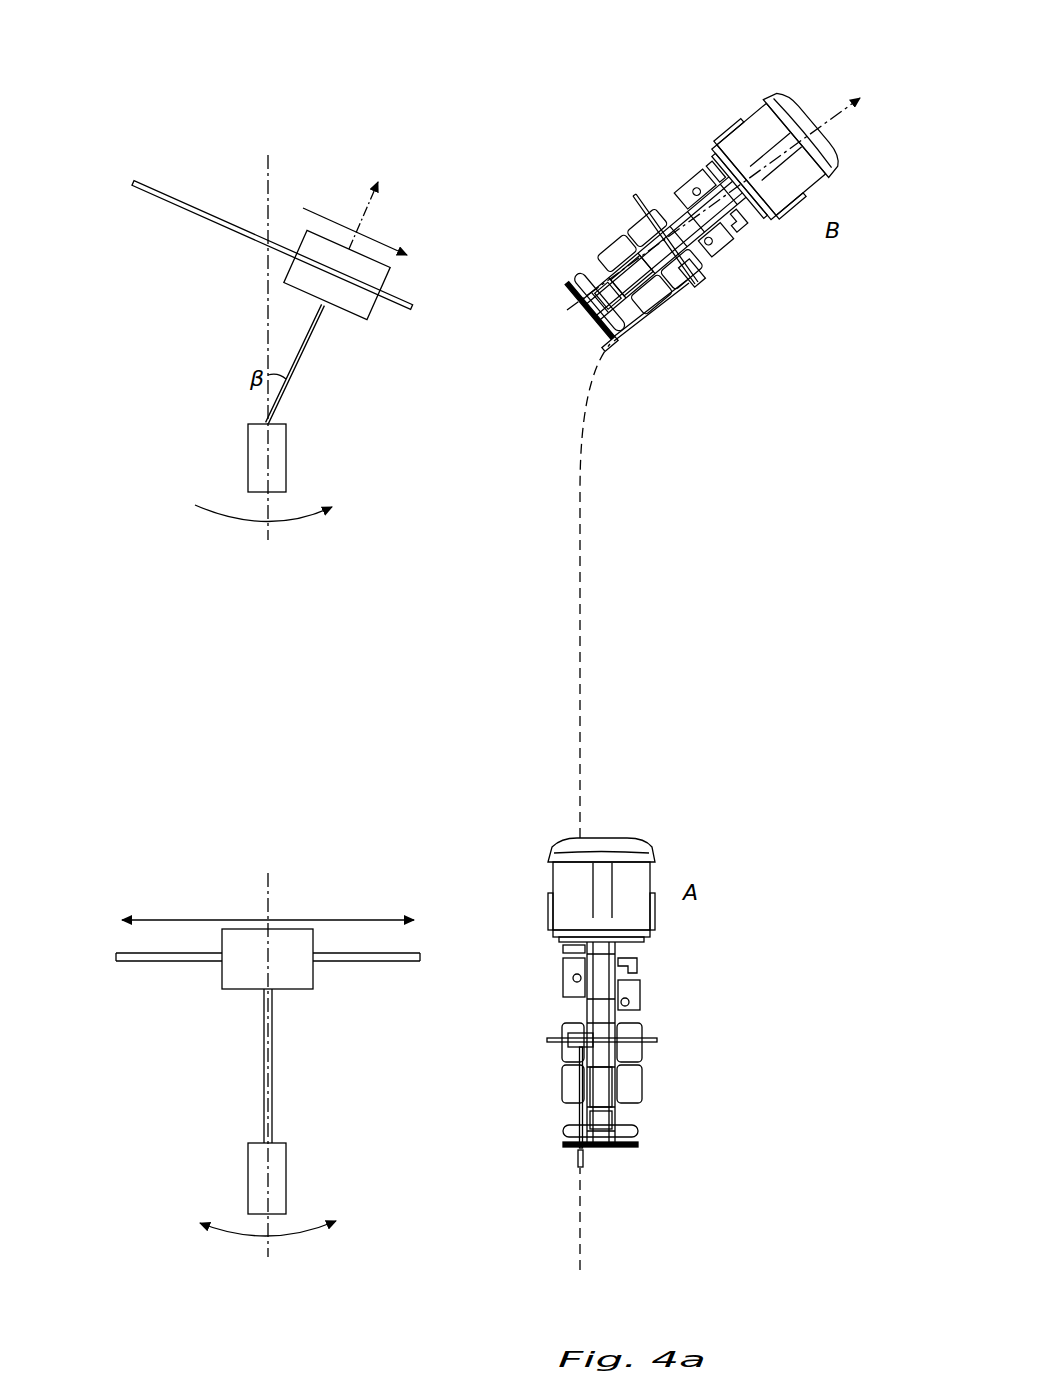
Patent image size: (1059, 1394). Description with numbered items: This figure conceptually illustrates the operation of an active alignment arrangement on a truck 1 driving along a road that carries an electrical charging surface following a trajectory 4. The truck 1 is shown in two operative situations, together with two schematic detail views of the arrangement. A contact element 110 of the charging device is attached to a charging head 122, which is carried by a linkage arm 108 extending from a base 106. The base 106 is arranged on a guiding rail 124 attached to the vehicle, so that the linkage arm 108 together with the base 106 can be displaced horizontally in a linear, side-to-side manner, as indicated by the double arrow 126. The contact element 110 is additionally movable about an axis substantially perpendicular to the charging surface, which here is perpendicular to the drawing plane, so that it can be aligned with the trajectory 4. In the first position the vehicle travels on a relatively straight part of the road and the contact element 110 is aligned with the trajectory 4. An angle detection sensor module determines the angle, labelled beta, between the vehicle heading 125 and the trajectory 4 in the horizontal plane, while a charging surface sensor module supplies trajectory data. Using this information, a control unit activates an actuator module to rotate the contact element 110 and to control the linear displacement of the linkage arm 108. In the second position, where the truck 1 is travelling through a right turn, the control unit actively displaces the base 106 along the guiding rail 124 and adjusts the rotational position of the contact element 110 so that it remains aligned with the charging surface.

The truck 1 is at (676, 121).
The trajectory 4 is at (268, 177).
The base 106 is at (297, 277).
The linkage arm 108 is at (305, 352).
The contact element 110 is at (248, 431).
The charging head 122 is at (248, 480).
The guiding rail 124 is at (170, 207).
The vehicle heading 125 is at (372, 203).
The double arrow 126 is at (163, 894).